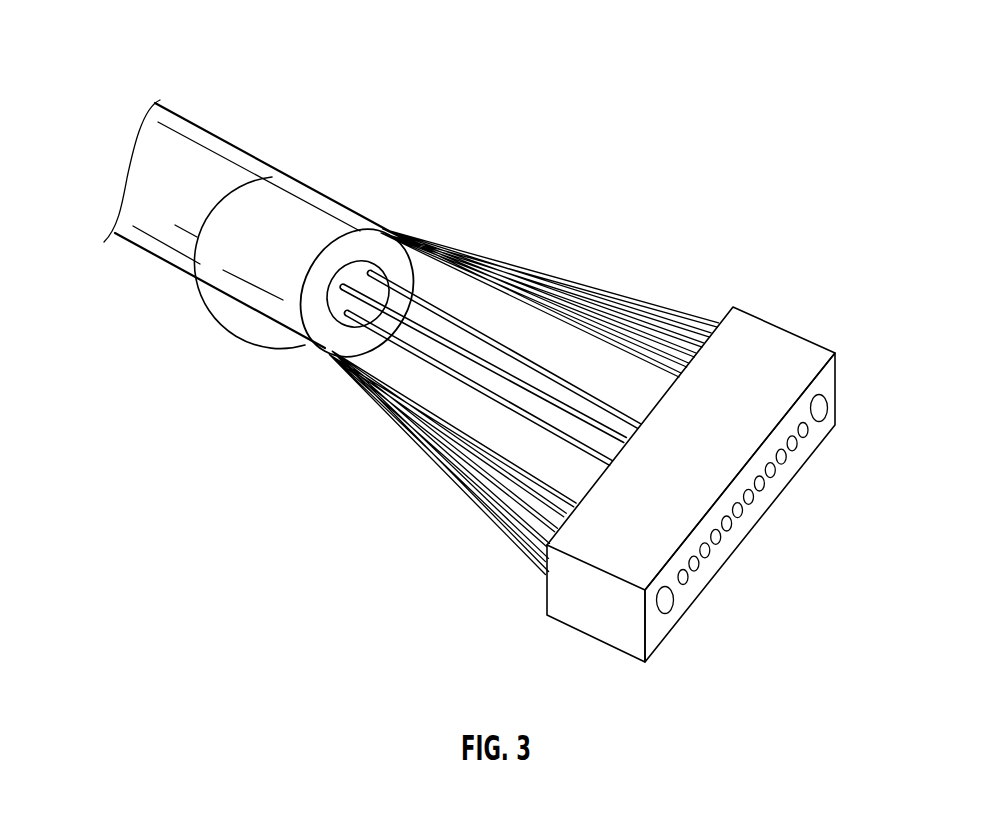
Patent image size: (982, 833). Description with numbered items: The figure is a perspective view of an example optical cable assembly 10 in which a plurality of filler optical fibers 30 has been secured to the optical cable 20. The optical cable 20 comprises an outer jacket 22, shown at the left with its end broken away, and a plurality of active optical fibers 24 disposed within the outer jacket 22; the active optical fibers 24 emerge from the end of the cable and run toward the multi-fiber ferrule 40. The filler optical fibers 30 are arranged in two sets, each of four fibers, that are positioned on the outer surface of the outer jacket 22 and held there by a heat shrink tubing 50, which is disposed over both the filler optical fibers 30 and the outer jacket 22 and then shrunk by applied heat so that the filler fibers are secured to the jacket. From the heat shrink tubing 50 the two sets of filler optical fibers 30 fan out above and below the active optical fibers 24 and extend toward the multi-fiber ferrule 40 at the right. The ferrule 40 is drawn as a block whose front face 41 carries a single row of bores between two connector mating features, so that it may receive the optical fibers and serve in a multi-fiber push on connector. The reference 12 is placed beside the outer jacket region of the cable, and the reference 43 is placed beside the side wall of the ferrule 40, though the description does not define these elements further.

The optical cable assembly 10 is at (418, 113).
The cable jacket 12 is at (143, 200).
The optical cable 20 is at (197, 77).
The outer jacket 22 is at (195, 250).
The active optical fibers 24 is at (408, 370).
The filler optical fibers 30 is at (578, 268).
The multi-fiber ferrule 40 is at (867, 345).
The front face 41 is at (688, 603).
The connector side wall 43 is at (545, 598).
The heat shrink tubing 50 is at (312, 208).